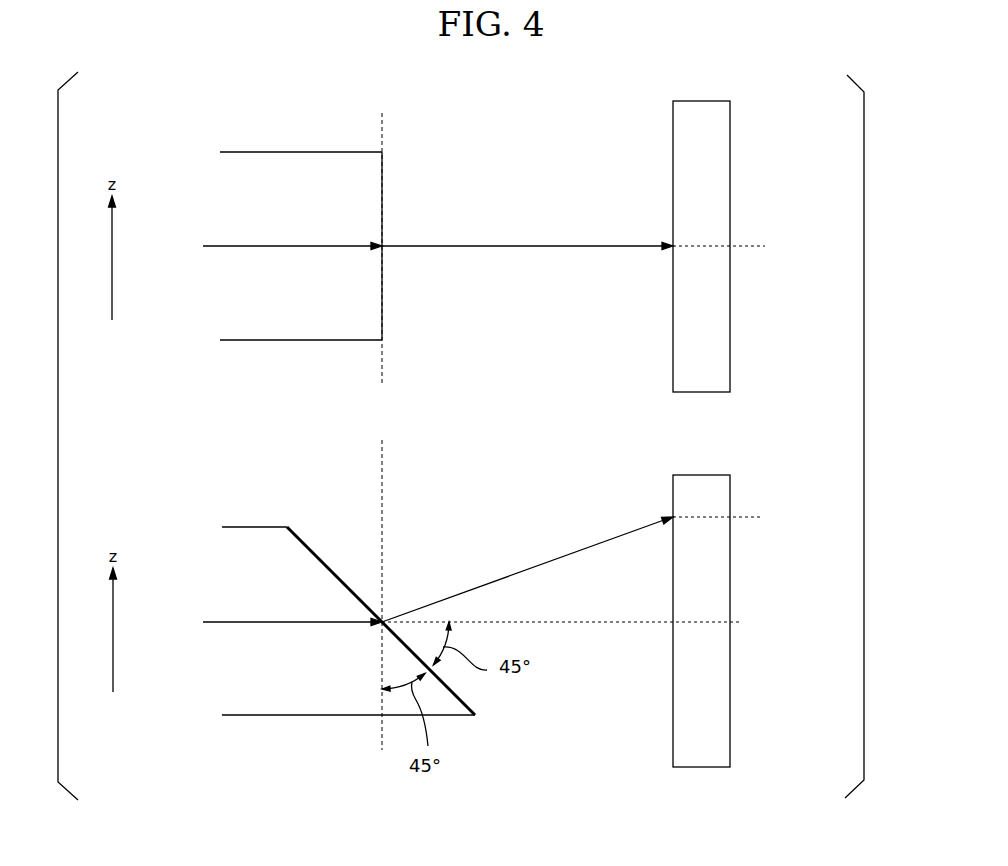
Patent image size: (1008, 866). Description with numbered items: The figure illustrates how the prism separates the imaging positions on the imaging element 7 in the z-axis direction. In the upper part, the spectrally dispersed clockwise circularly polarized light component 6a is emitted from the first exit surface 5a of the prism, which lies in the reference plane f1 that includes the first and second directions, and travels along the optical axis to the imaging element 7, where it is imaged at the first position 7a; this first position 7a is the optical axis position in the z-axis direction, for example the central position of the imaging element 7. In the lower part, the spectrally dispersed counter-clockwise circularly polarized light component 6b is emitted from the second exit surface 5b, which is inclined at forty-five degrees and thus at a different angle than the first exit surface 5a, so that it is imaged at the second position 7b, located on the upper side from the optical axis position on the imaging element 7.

The first exit surface 5a is at (383, 176).
The second exit surface 5b is at (326, 556).
The spectrally dispersed clockwise circularly polarized light component 6a is at (558, 246).
The spectrally dispersed counter-clockwise circularly polarized light component 6b is at (543, 562).
The imaging element 7 is at (710, 122).
The first position 7a is at (737, 248).
The second position 7b is at (737, 520).
The reference plane f1 is at (296, 246).